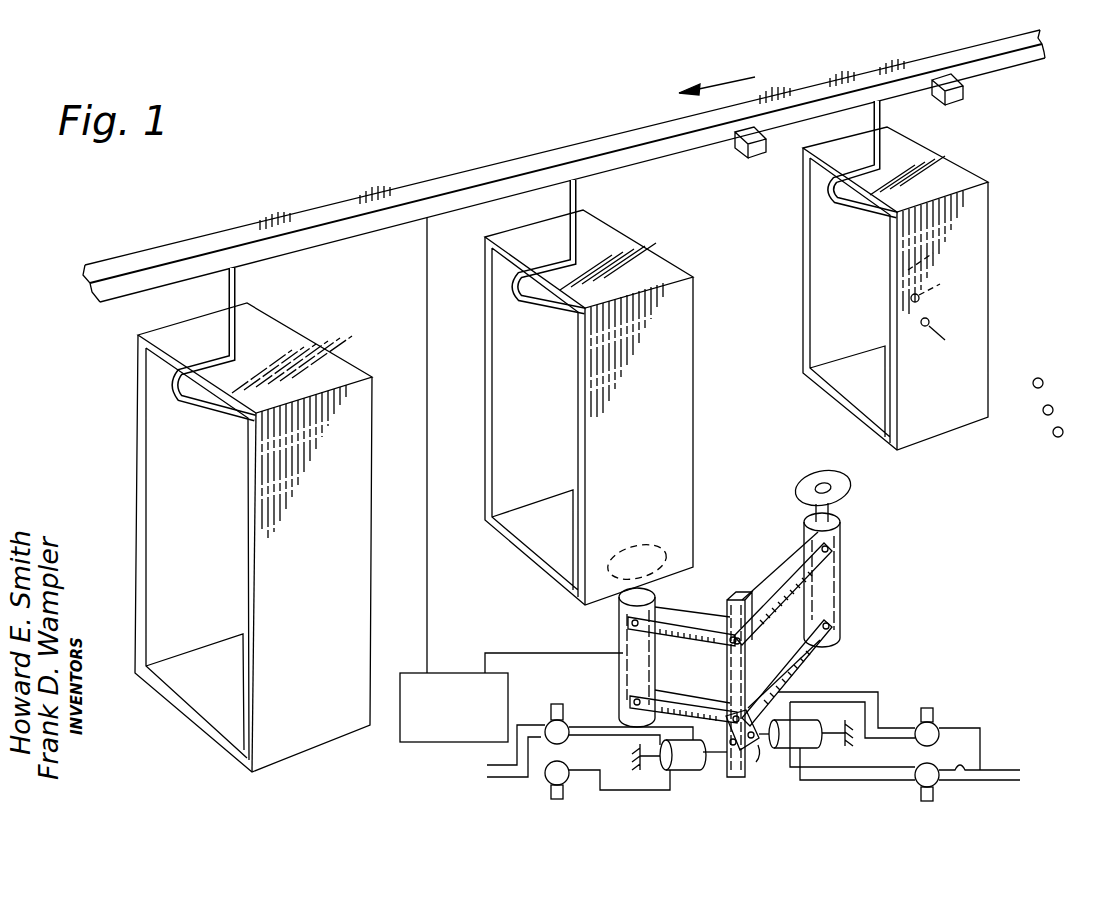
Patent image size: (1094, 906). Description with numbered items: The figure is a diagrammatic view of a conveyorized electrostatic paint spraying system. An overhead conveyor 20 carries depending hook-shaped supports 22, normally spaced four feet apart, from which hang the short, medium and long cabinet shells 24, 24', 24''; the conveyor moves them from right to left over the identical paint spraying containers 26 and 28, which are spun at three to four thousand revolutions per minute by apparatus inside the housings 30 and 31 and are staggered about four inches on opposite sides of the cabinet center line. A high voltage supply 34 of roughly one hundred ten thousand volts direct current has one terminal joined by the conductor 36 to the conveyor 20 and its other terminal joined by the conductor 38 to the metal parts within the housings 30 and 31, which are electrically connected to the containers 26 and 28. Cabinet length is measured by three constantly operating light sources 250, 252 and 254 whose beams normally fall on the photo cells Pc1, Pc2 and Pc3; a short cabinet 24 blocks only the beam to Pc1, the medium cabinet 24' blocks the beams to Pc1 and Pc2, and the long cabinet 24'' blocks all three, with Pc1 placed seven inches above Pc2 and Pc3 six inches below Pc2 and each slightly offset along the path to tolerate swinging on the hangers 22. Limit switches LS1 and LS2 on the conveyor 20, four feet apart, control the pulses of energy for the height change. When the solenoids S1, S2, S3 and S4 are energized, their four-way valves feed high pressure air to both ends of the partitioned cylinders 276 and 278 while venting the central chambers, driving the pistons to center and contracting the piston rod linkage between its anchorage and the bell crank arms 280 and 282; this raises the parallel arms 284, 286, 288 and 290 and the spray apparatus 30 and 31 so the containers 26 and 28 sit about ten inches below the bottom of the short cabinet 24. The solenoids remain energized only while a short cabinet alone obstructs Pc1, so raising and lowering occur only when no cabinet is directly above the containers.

The overhead conveyor 20 is at (483, 167).
The hook-shaped supports 22 is at (240, 283).
The short cabinet shell 24 is at (868, 288).
The medium cabinet shell 24' is at (564, 407).
The long cabinet shell 24'' is at (213, 537).
The paint spraying container 26 is at (822, 472).
The paint spraying container 28 is at (660, 540).
The housing 30 is at (840, 590).
The housing 31 is at (623, 660).
The high voltage supply 34 is at (400, 742).
The conductor 36 is at (430, 573).
The conductor 38 is at (565, 653).
The light source 250 is at (935, 253).
The light source 252 is at (942, 288).
The light source 254 is at (946, 340).
The cylinder 276 is at (798, 750).
The cylinder 278 is at (690, 768).
The bell crank arm 280 is at (747, 699).
The bell crank arm 282 is at (760, 752).
The parallel arm 284 is at (787, 558).
The parallel arm 286 is at (812, 672).
The parallel arm 288 is at (700, 620).
The parallel arm 290 is at (696, 700).
The limit switch LS1 is at (950, 100).
The limit switch LS2 is at (752, 150).
The photo cell Pc1 is at (1037, 378).
The photo cell Pc2 is at (1043, 410).
The photo cell Pc3 is at (1054, 436).
The solenoid S1 is at (933, 712).
The solenoid S2 is at (935, 794).
The solenoid S3 is at (553, 704).
The solenoid S4 is at (550, 792).